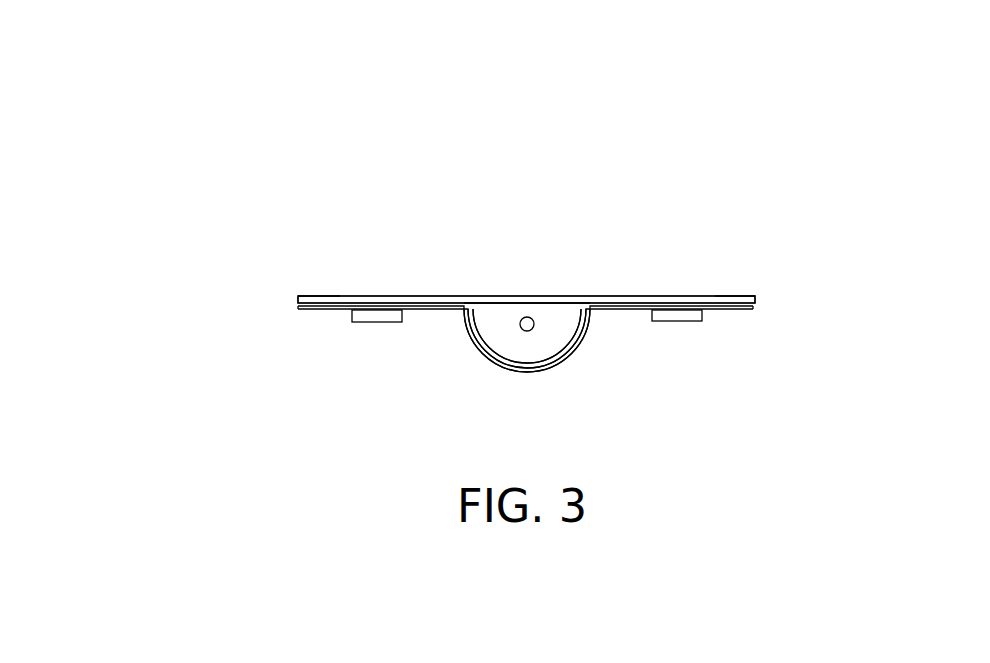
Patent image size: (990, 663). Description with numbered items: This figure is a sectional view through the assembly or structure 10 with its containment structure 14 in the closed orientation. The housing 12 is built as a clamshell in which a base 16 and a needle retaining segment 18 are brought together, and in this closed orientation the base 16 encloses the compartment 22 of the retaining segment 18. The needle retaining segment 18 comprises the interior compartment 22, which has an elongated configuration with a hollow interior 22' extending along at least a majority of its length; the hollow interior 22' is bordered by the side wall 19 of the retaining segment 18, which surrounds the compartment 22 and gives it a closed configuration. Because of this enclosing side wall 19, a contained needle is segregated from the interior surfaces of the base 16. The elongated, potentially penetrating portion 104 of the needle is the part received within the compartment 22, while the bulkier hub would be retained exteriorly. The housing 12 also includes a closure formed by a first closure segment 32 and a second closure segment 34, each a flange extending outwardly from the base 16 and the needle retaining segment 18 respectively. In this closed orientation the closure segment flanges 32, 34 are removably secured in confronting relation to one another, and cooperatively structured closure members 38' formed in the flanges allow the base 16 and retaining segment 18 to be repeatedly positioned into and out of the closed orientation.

The assembly or structure 10 is at (620, 160).
The housing 12 is at (792, 304).
The containment structure 14 is at (298, 309).
The base 16 is at (580, 342).
The needle retaining segment 18 is at (472, 307).
The side wall 19 is at (562, 350).
The interior compartment 22 is at (516, 385).
The hollow interior 22' is at (513, 268).
The first closure segment 32 is at (302, 313).
The second closure segment 34 is at (311, 296).
The closure member 38' is at (526, 394).
The penetrating portion 104 is at (527, 317).